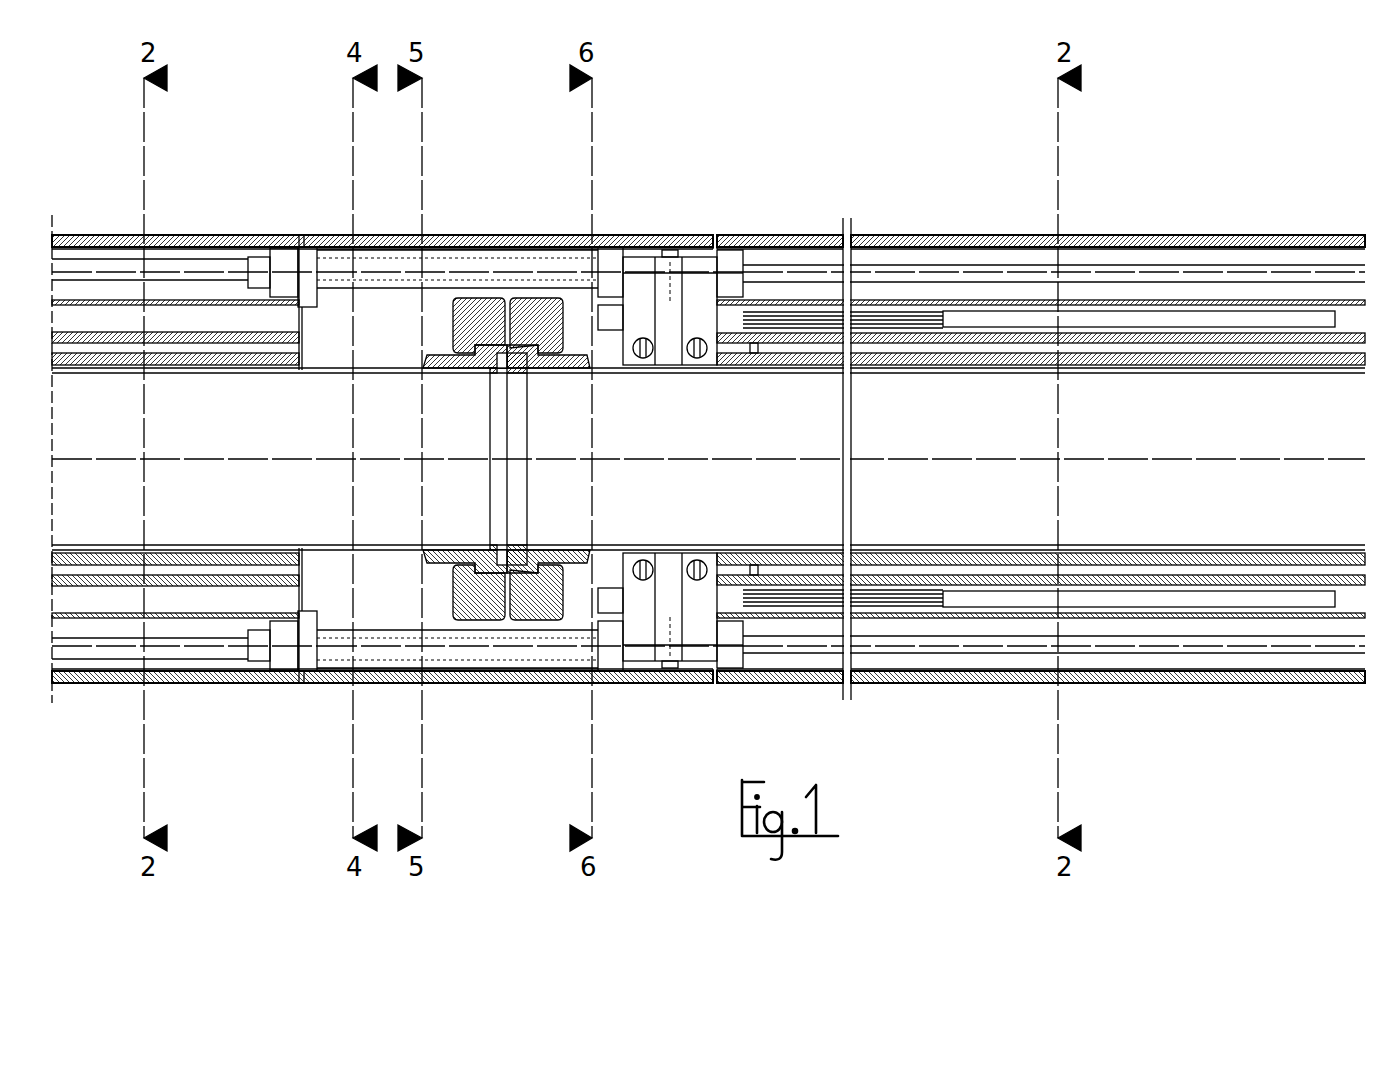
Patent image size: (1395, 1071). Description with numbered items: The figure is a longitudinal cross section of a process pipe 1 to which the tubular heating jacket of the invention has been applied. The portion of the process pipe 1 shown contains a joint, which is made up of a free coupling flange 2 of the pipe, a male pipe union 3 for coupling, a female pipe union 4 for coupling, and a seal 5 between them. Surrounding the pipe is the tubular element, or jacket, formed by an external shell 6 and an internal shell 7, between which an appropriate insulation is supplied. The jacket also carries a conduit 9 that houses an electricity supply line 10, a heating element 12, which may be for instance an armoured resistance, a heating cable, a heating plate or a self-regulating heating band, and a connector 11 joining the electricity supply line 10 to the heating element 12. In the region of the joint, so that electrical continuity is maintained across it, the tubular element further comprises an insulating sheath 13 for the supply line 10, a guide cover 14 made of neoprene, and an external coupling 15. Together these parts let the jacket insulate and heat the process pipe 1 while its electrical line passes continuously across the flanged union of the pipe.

The process pipe 1 is at (300, 459).
The free coupling flange 2 is at (533, 610).
The male pipe union 3 is at (572, 558).
The female pipe union 4 is at (443, 558).
The seal 5 is at (502, 560).
The external shell 6 is at (812, 242).
The internal shell 7 is at (1062, 337).
The conduit 9 is at (868, 243).
The electricity supply line 10 is at (958, 270).
The connector 11 is at (670, 290).
The heating element 12 is at (1168, 316).
The insulating sheath 13 is at (522, 256).
The guide cover 14 is at (303, 240).
The external coupling 15 is at (430, 240).